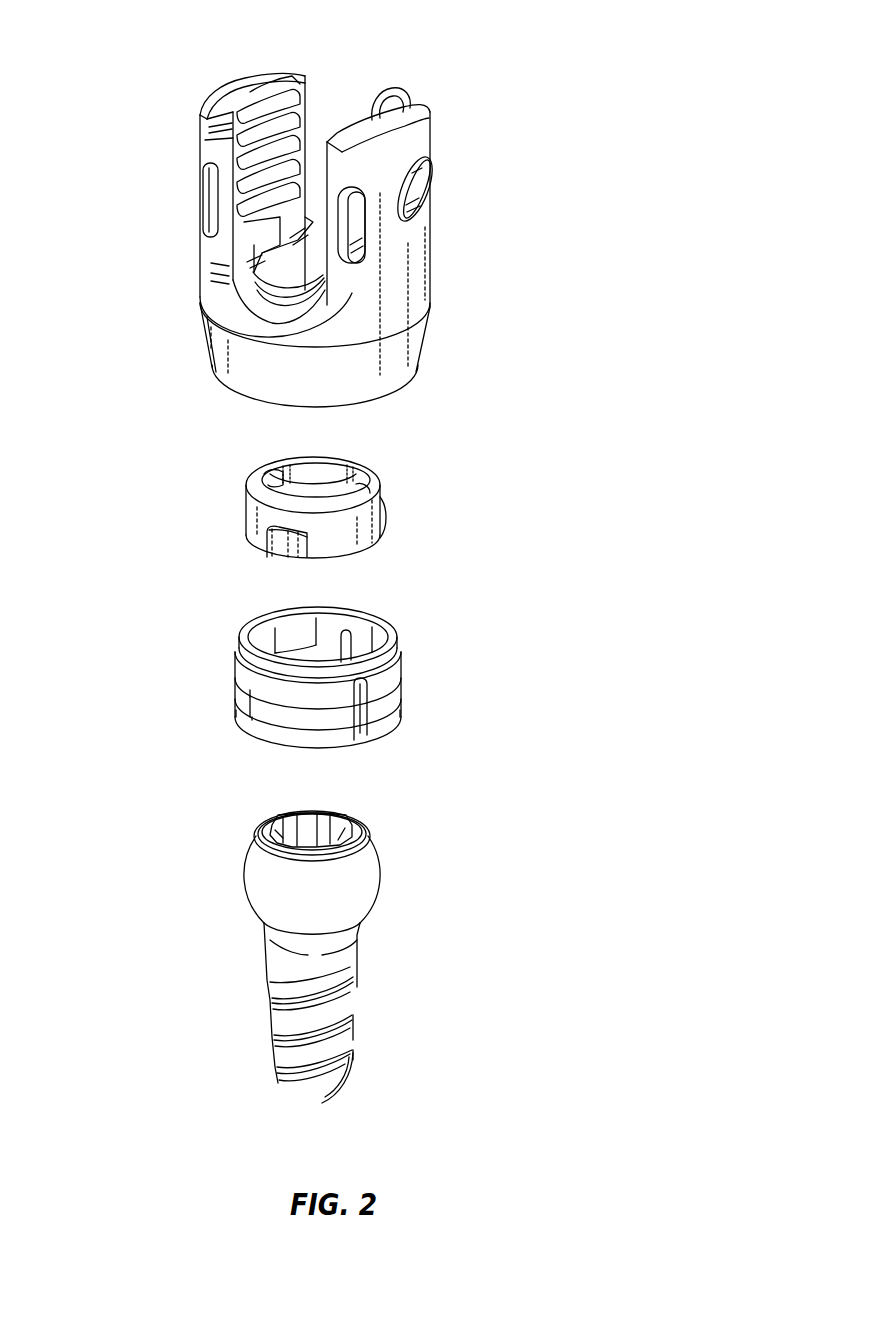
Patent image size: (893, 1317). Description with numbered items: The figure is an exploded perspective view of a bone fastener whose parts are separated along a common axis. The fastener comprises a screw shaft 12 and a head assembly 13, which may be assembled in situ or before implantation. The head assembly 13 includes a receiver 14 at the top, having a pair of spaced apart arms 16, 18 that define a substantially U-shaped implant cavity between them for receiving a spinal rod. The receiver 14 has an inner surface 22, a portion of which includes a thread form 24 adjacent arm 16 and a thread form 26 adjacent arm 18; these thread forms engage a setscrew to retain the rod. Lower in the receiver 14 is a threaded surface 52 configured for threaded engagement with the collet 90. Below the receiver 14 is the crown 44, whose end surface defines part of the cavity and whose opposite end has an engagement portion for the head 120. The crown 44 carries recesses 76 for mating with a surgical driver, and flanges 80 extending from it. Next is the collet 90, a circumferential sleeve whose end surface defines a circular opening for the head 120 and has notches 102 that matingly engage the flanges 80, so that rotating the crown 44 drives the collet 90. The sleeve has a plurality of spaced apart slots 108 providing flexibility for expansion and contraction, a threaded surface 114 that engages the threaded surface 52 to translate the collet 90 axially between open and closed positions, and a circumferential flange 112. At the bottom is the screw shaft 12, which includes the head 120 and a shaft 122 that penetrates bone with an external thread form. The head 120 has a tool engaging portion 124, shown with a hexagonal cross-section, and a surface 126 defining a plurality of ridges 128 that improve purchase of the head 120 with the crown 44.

The screw shaft 12 is at (402, 981).
The head assembly 13 is at (96, 67).
The receiver 14 is at (485, 226).
The arm 16 is at (231, 83).
The arm 18 is at (430, 140).
The inner surface 22 is at (278, 72).
The thread form 24 is at (292, 74).
The thread form 26 is at (381, 91).
The crown 44 is at (415, 495).
The threaded surface 52 is at (325, 284).
The recess 76 is at (267, 472).
The flange 80 is at (267, 545).
The collet 90 is at (416, 670).
The notch 102 is at (288, 634).
The slot 108 is at (366, 725).
The circumferential flange 112 is at (248, 729).
The threaded surface 114 is at (251, 682).
The head 120 is at (241, 886).
The shaft 122 is at (298, 1050).
The tool engaging portion 124 is at (327, 830).
The surface 126 is at (254, 848).
The ridge 128 is at (260, 835).